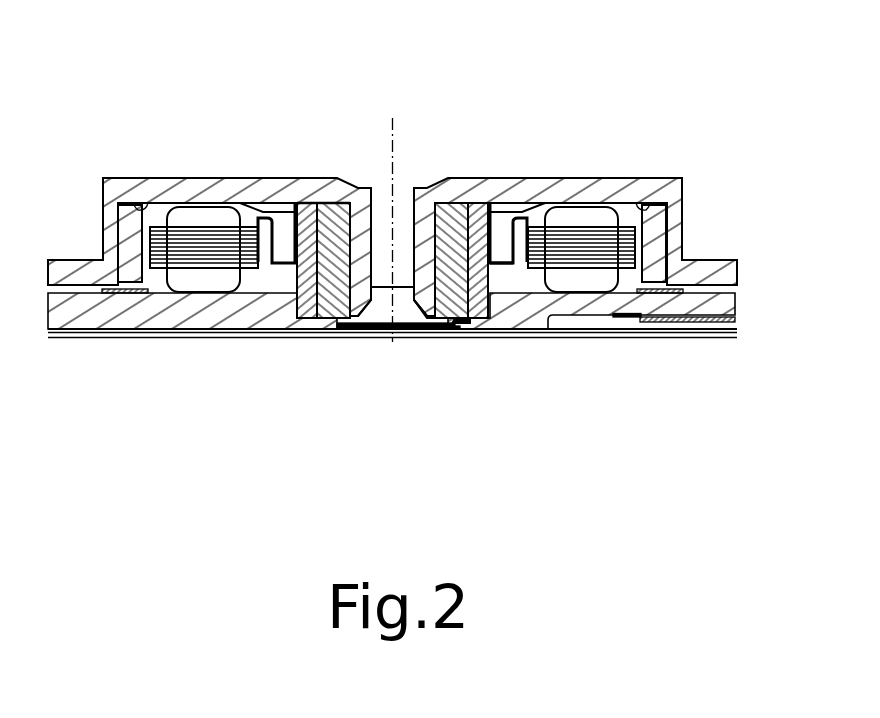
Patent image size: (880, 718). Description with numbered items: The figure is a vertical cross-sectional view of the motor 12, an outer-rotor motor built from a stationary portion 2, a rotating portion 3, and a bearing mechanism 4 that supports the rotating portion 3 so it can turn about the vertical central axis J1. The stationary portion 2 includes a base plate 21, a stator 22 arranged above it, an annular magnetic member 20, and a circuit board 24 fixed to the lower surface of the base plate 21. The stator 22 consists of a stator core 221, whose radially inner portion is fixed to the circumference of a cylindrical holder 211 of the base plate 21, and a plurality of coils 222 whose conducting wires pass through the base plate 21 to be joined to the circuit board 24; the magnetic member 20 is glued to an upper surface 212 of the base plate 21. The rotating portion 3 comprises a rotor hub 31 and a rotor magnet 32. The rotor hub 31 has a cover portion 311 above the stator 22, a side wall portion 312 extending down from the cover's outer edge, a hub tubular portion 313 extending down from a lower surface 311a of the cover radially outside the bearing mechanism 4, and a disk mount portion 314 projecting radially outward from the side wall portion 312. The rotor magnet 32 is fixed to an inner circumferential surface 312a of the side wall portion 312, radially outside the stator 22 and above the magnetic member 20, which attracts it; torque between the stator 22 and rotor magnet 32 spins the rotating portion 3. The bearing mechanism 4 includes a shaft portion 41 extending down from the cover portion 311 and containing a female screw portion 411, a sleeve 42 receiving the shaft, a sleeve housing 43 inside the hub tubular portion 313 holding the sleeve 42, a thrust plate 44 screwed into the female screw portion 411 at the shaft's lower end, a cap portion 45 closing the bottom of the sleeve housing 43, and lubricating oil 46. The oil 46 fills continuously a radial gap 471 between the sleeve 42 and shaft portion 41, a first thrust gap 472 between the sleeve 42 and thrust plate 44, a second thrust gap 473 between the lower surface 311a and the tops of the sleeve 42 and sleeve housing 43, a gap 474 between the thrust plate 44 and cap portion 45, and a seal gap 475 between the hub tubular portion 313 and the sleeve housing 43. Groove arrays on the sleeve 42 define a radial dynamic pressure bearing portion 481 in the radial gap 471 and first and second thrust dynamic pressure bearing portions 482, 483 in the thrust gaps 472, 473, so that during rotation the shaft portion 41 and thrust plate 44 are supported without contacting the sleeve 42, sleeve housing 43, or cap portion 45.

The stationary portion 2 is at (370, 316).
The rotating portion 3 is at (392, 204).
The bearing mechanism 4 is at (331, 286).
The motor 12 is at (168, 65).
The magnetic member 20 is at (680, 305).
The base plate 21 is at (520, 290).
The stator 22 is at (370, 328).
The circuit board 24 is at (710, 322).
The rotor hub 31 is at (392, 217).
The rotor magnet 32 is at (668, 178).
The shaft portion 41 is at (328, 307).
The sleeve 42 is at (305, 308).
The sleeve housing 43 is at (273, 270).
The thrust plate 44 is at (360, 330).
The cap portion 45 is at (342, 326).
The lubricating oil 46 is at (257, 240).
The cylindrical holder 211 is at (553, 203).
The upper surface 212 is at (523, 300).
The stator core 221 is at (578, 250).
The coils 222 is at (178, 278).
The cover portion 311 is at (588, 200).
The lower surface 311a is at (645, 203).
The side wall portion 312 is at (102, 222).
The inner circumferential surface 312a is at (142, 203).
The hub tubular portion 313 is at (528, 200).
The disk mount portion 314 is at (72, 270).
The female screw portion 411 is at (384, 188).
The radial gap 471 is at (275, 203).
The first thrust gap 472 is at (422, 300).
The second thrust gap 473 is at (480, 203).
The gap 474 is at (365, 318).
The seal gap 475 is at (227, 197).
The radial dynamic pressure bearing portion 481 is at (305, 203).
The first thrust dynamic pressure bearing portion 482 is at (438, 320).
The second thrust dynamic pressure bearing portion 483 is at (450, 203).
The central axis J1 is at (397, 138).